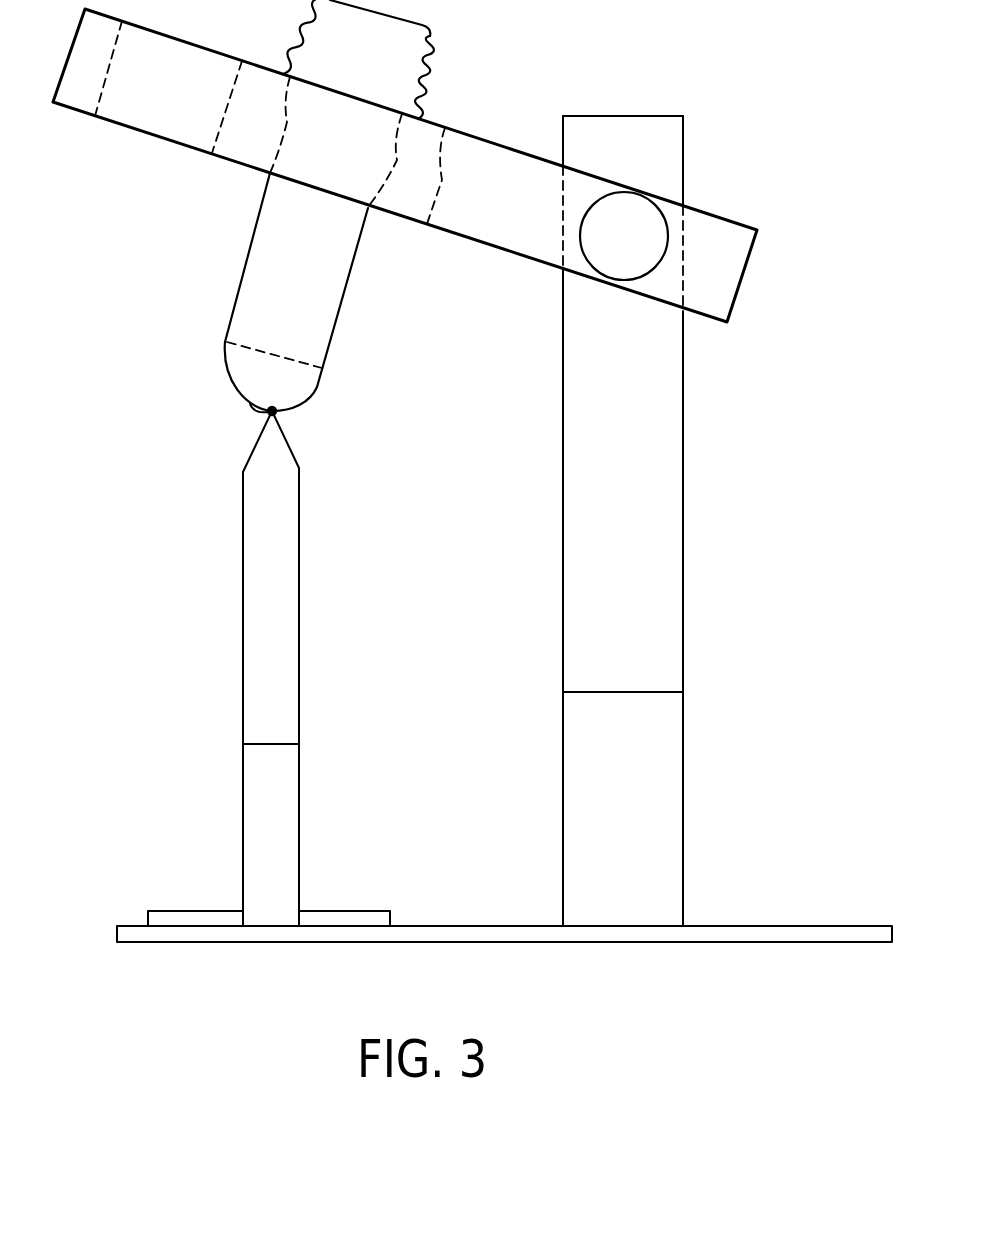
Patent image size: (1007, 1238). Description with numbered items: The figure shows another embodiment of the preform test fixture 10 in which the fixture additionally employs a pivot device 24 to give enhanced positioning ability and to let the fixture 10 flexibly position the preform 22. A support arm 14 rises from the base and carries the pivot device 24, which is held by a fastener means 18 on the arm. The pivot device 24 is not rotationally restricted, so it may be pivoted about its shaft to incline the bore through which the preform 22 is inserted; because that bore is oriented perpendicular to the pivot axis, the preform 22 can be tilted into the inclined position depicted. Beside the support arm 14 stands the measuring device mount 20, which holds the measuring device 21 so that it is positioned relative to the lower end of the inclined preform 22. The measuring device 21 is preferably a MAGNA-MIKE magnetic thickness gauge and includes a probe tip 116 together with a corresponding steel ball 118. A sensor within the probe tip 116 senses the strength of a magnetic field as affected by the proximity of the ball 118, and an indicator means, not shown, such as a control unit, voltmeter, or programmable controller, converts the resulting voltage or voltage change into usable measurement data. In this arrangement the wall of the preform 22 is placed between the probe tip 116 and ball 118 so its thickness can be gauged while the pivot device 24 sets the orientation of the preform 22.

The preform test fixture 10 is at (887, 123).
The support arm 14 is at (625, 660).
The fastener means 18 is at (659, 284).
The measuring device mount 20 is at (271, 880).
The measuring device 21 is at (276, 585).
The preform 22 is at (314, 314).
The pivot device 24 is at (686, 201).
The probe tip 116 is at (272, 412).
The ball 118 is at (272, 411).